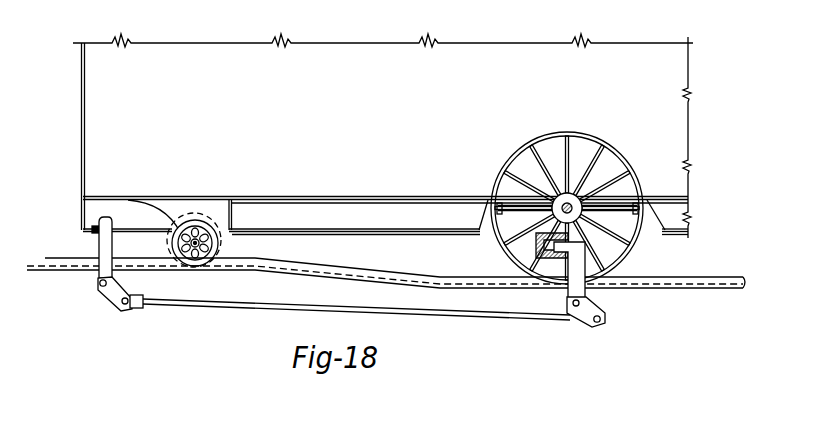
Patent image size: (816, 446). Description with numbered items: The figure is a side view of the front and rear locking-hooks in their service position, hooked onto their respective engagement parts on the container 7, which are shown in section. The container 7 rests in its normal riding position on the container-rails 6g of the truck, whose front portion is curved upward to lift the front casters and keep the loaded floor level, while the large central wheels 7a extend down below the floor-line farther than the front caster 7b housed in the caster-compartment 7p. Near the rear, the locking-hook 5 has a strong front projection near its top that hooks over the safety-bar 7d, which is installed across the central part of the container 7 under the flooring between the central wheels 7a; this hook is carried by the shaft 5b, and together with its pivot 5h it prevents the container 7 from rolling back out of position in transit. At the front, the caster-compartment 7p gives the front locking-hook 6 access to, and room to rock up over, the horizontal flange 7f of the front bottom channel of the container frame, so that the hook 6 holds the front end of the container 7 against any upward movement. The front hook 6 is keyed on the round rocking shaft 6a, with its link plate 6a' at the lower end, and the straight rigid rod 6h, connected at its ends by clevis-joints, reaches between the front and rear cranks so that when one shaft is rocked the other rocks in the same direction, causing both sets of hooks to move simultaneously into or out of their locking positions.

The container 7 is at (166, 47).
The central wheel 7a is at (548, 136).
The roller 7b is at (203, 237).
The safety-bar 7d is at (536, 250).
The horizontal flange 7f is at (88, 234).
The caster-compartment 7p is at (118, 207).
The front locking-hook 6 is at (110, 249).
The rocking shaft 6a is at (71, 291).
The link plate 6a' is at (86, 309).
The rod 6h is at (222, 308).
The container-rail 6g is at (350, 268).
The locking-hook 5 is at (586, 251).
The pivot 5h is at (601, 309).
The shaft 5b is at (573, 323).